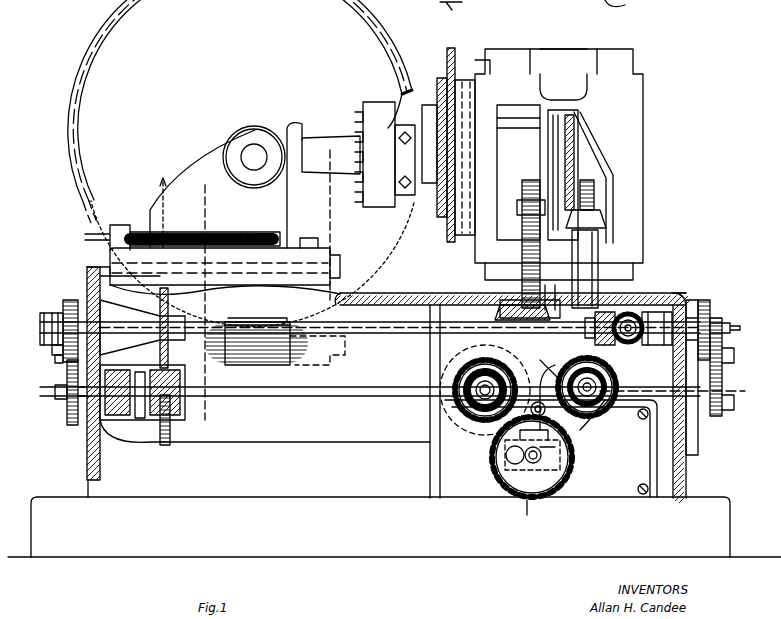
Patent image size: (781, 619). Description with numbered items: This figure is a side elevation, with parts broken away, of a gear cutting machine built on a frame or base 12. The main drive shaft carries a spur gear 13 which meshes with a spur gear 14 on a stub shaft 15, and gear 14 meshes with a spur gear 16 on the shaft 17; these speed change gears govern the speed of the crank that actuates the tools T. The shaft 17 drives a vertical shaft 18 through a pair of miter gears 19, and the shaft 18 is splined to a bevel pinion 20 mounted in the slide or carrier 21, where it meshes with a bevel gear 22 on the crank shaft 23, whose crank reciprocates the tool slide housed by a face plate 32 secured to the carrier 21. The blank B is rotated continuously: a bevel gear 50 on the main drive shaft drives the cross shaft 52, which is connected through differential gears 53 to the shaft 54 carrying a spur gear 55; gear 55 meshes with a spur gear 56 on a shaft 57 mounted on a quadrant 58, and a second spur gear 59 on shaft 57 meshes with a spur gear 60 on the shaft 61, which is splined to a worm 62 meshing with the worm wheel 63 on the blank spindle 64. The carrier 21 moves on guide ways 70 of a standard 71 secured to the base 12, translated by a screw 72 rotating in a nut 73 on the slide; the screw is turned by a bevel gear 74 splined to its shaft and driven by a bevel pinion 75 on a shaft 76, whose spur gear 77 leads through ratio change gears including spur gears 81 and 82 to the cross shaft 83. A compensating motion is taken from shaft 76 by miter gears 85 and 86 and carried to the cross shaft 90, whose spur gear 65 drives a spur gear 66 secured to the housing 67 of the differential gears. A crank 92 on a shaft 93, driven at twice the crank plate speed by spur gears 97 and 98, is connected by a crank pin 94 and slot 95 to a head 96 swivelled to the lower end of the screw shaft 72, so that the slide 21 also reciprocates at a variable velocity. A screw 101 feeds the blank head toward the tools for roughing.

The frame or base 12 is at (672, 468).
The spur gear 13 is at (490, 45).
The spur gear 14 is at (528, 40).
The stub shaft 15 is at (600, 430).
The spur gear 16 is at (612, 420).
The shaft 17 is at (618, 9).
The vertical shaft 18 is at (596, 192).
The miter gears 19 is at (610, 370).
The bevel pinion 20 is at (604, 215).
The slide or carrier 21 is at (643, 90).
The bevel gear 22 is at (572, 130).
The crank shaft 23 is at (506, 135).
The face plate 32 is at (452, 12).
The bevel gear 50 is at (470, 365).
The cross shaft 52 is at (352, 397).
The differential gears 53 is at (142, 420).
The shaft 54 is at (80, 405).
The spur gear 55 is at (67, 418).
The spur gear 56 is at (66, 305).
The shaft 57 is at (42, 326).
The quadrant 58 is at (84, 318).
The spur gear 59 is at (56, 352).
The spur gear 60 is at (58, 362).
The shaft 61 is at (335, 356).
The worm 62 is at (280, 364).
The worm wheel 63 is at (380, 263).
The blank spindle 64 is at (248, 156).
The spur gear 65 is at (168, 362).
The spur gear 66 is at (165, 445).
The housing 67 is at (120, 420).
The guide ways 70 is at (512, 52).
The standard 71 is at (565, 58).
The screw 72 is at (518, 252).
The nut 73 is at (573, 269).
The bevel gear 74 is at (500, 312).
The bevel pinion 75 is at (572, 292).
The shaft 76 is at (608, 325).
The spur gear 77 is at (705, 300).
The spur gear 81 is at (732, 368).
The spur gear 82 is at (714, 415).
The cross shaft 83 is at (662, 400).
The miter gear 85 is at (686, 300).
The miter gear 86 is at (636, 318).
The cross shaft 90 is at (372, 333).
The crank 92 is at (525, 470).
The shaft 93 is at (540, 458).
The crank pin 94 is at (508, 460).
The slot 95 is at (552, 452).
The head 96 is at (550, 440).
The spur gear 97 is at (480, 60).
The spur gear 98 is at (557, 267).
The screw 101 is at (140, 222).
The blank B is at (372, 208).
The tools T is at (398, 190).